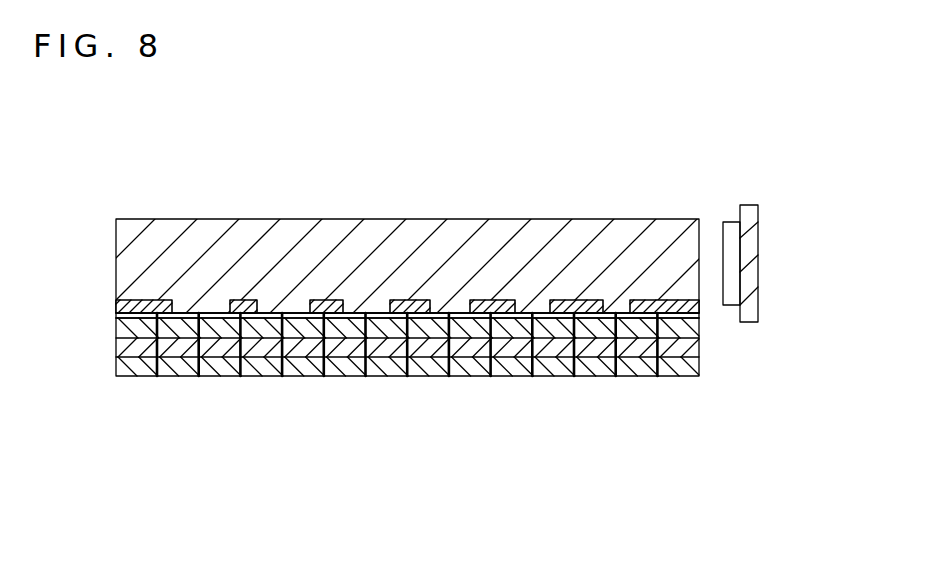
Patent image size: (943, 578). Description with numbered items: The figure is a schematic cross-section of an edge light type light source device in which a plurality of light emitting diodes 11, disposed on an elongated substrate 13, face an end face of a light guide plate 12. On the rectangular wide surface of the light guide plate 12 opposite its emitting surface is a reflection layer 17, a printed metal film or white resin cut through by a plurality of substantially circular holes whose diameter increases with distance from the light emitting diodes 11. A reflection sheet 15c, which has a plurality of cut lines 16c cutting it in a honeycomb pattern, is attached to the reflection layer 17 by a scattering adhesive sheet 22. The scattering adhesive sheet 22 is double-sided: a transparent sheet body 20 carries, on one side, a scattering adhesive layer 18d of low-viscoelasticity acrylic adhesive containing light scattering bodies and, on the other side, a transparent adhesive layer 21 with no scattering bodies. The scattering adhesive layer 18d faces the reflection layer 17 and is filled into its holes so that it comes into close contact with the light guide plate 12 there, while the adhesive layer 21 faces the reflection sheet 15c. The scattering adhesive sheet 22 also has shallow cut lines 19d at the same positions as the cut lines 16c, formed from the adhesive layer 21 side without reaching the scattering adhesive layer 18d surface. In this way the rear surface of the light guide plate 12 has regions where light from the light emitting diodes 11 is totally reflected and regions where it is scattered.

The light emitting diode 11 is at (733, 222).
The light guide plate 12 is at (503, 233).
The substrate 13 is at (752, 242).
The reflection sheet 15c is at (402, 431).
The cut lines 16c is at (488, 362).
The reflection layer 17 is at (244, 300).
The scattering adhesive layer 18d is at (217, 314).
The cut lines 19d is at (407, 400).
The sheet body 20 is at (140, 333).
The adhesive layer 21 is at (182, 345).
The scattering adhesive sheet 22 is at (402, 431).